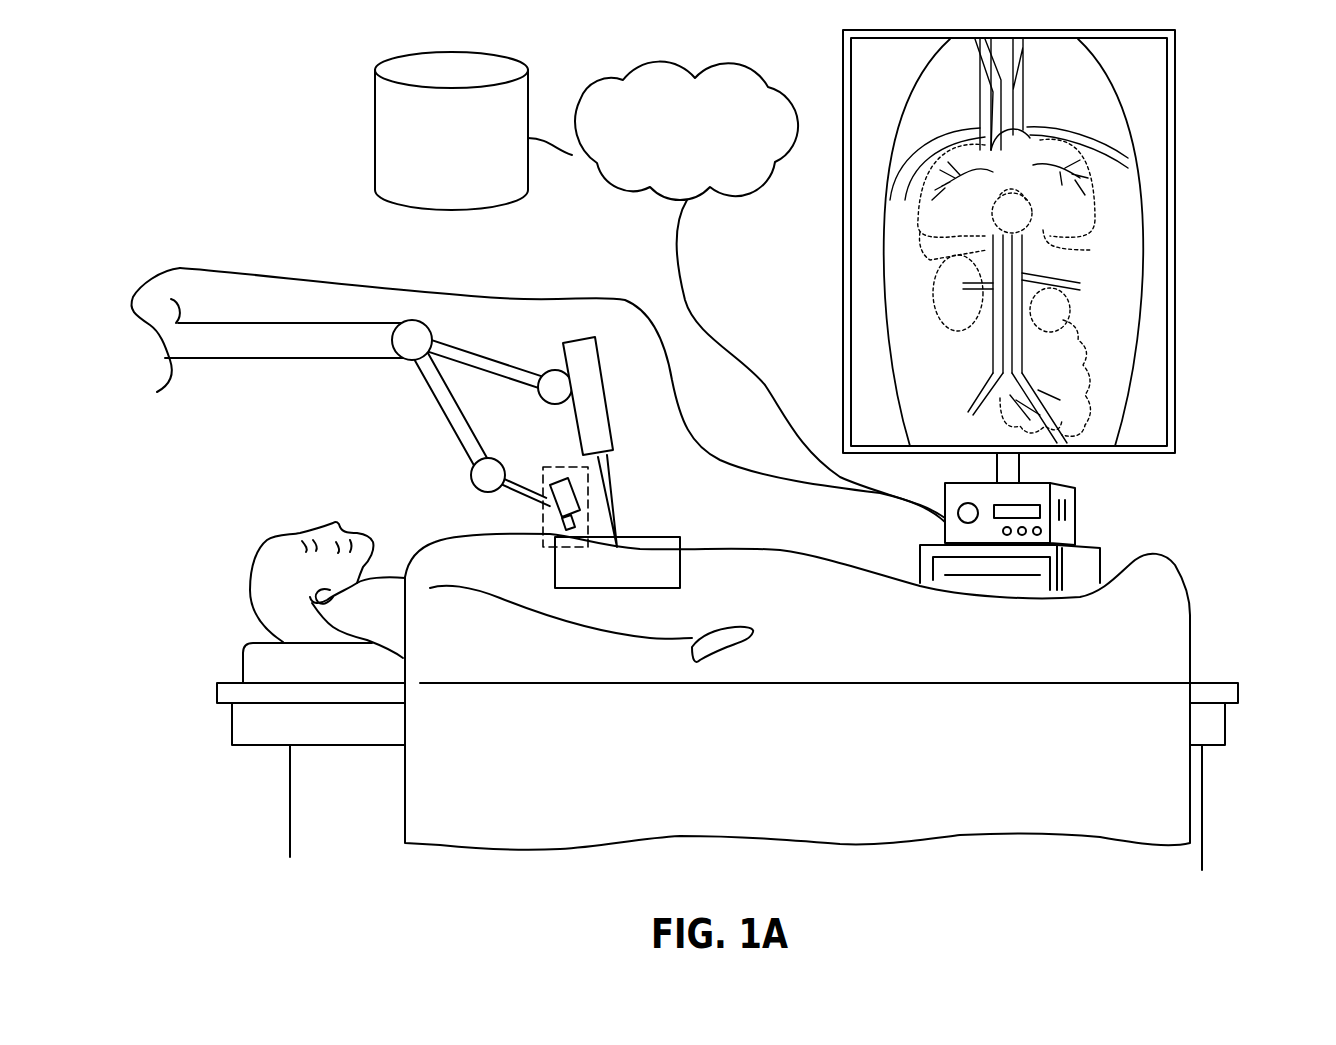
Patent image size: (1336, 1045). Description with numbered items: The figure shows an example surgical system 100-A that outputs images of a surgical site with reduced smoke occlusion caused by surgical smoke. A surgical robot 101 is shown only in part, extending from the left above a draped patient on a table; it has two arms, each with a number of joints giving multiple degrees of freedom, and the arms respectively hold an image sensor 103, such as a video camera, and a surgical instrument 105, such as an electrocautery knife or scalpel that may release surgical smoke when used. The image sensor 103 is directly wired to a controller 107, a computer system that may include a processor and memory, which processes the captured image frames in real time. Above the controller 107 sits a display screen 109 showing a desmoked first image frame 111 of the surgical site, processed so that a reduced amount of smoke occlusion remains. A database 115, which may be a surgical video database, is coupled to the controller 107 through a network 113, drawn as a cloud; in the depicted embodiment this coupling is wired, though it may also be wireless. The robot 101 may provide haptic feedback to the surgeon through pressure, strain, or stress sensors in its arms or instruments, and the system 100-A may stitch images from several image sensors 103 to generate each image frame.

The surgical system 100-A is at (261, 143).
The surgical robot 101 is at (328, 348).
The image sensor 103 is at (543, 525).
The surgical instrument 105 is at (568, 337).
The controller 107 is at (1075, 515).
The display screen 109 is at (1176, 391).
The desmoked first image frame 111 is at (958, 101).
The network 113 is at (686, 131).
The database 115 is at (473, 131).